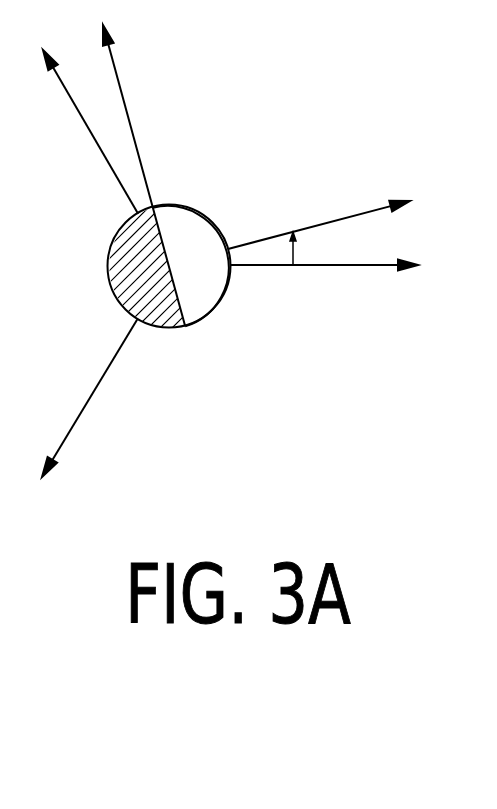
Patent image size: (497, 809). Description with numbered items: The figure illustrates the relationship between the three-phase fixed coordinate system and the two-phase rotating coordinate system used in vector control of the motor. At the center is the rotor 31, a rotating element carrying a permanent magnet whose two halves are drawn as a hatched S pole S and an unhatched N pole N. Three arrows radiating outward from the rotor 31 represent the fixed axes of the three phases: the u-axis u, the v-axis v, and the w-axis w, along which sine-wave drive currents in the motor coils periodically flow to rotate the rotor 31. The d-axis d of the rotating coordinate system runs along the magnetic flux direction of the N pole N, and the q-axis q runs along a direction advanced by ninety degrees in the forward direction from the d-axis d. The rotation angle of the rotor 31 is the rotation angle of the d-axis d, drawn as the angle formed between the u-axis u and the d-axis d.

The rotor 31 is at (156, 227).
The S pole S is at (156, 265).
The N pole N is at (191, 266).
The q-axis q is at (141, 163).
The d-axis d is at (328, 218).
The u-axis u is at (333, 265).
The v-axis v is at (82, 122).
The w-axis w is at (84, 412).